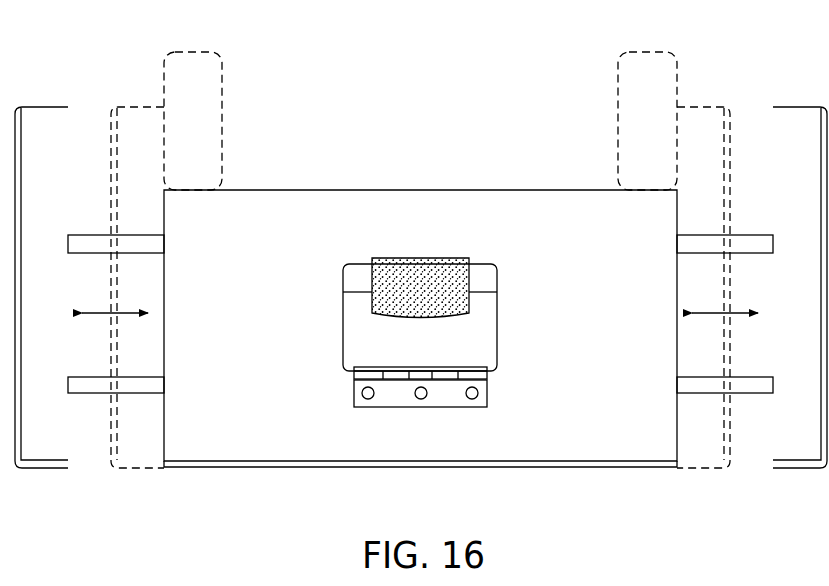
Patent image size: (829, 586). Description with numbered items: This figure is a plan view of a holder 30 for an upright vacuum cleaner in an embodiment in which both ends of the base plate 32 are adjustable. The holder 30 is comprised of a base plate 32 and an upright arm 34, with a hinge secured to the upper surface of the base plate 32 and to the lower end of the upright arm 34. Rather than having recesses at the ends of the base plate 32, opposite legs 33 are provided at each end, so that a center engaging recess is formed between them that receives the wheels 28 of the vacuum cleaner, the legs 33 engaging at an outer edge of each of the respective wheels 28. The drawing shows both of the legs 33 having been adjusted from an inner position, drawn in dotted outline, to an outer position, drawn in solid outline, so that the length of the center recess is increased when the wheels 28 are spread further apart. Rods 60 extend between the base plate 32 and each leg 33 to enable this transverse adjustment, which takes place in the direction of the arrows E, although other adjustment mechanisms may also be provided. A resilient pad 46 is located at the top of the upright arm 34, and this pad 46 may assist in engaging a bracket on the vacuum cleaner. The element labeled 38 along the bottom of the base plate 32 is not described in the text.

The wheels 28 is at (192, 52).
The holder 30 is at (582, 482).
The base plate 32 is at (266, 342).
The legs 33 is at (45, 127).
The upright arm 34 is at (495, 322).
The base plate 38 is at (321, 468).
The resilient pad 46 is at (419, 268).
The rods 60 is at (82, 245).
The arrows E is at (103, 313).